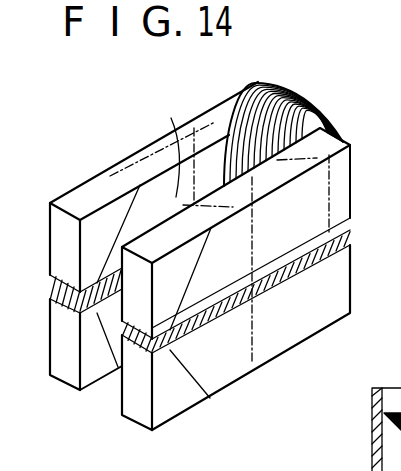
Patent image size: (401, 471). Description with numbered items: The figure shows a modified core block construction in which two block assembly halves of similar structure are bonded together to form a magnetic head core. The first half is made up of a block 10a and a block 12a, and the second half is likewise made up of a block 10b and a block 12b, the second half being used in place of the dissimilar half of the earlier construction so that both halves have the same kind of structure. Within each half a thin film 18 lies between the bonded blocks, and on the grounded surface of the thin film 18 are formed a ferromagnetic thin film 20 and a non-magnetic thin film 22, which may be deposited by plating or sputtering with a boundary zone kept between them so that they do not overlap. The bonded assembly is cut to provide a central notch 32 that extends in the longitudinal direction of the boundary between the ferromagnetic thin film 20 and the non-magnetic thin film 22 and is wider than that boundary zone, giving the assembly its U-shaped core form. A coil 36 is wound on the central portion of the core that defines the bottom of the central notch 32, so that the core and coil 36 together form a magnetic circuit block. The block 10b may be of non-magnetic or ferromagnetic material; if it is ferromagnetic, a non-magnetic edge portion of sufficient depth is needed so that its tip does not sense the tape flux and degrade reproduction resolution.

The block 10a is at (258, 294).
The block 10b is at (148, 236).
The block 12a is at (164, 415).
The block 12b is at (90, 196).
The thin film 18 is at (177, 292).
The ferromagnetic thin film 20 is at (50, 284).
The non-magnetic thin film 22 is at (350, 228).
The central notch 32 is at (172, 120).
The coil 36 is at (317, 100).